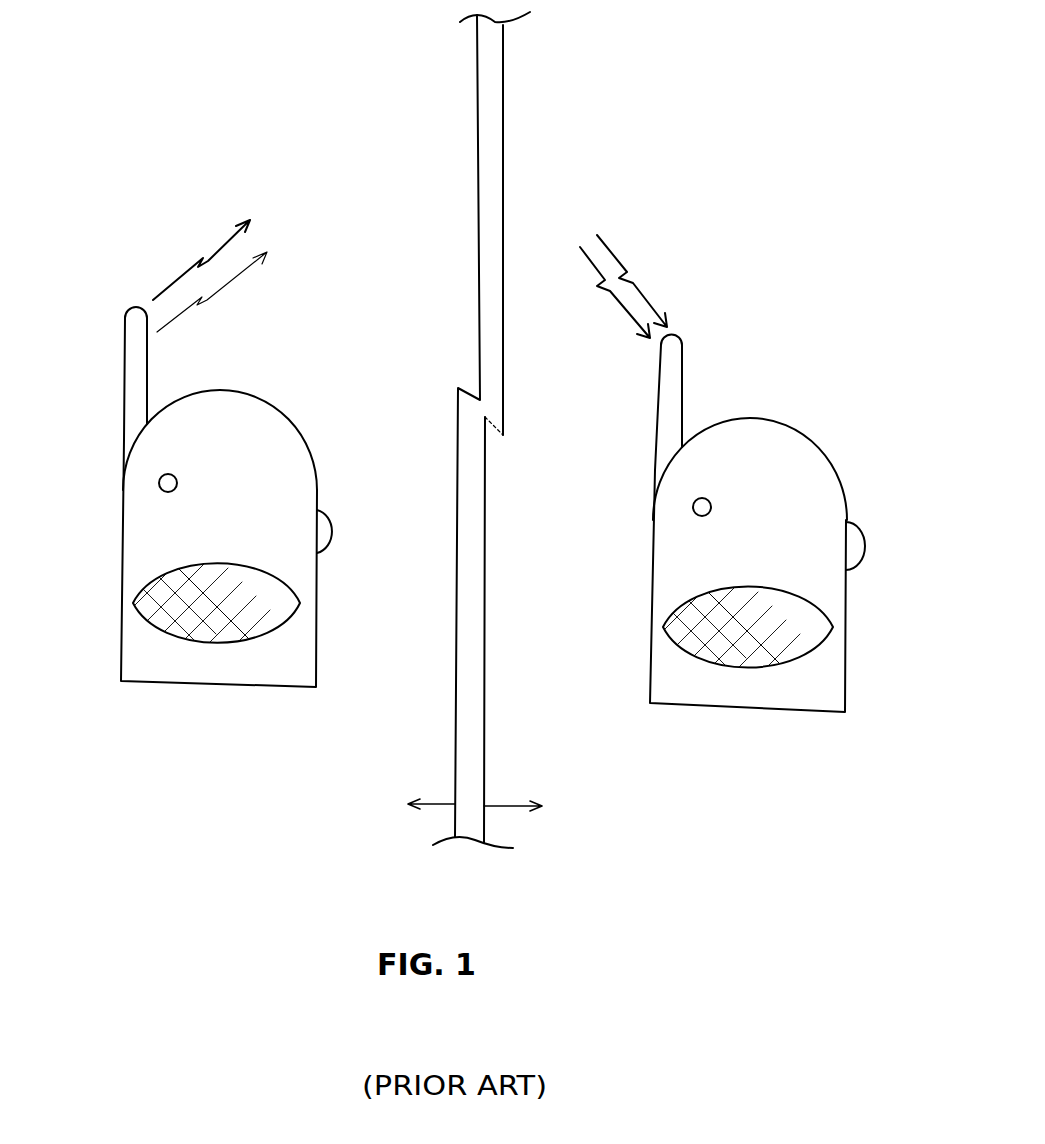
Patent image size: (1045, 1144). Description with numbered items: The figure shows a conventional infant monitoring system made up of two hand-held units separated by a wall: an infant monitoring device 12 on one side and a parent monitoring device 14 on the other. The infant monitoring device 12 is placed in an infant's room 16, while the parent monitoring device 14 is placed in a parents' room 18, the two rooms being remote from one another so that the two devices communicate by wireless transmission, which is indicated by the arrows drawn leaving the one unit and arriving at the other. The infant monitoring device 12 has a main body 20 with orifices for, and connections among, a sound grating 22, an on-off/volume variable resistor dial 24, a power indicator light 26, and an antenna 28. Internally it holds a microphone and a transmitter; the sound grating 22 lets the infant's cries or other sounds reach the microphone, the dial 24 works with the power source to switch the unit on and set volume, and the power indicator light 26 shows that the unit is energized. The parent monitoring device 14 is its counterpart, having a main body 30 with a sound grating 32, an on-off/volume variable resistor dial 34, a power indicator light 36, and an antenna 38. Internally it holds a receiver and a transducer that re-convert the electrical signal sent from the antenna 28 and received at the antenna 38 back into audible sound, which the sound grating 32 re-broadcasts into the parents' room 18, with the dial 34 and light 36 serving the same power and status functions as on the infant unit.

The infant monitoring device 12 is at (215, 495).
The parent monitoring device 14 is at (751, 512).
The infant's room 16 is at (407, 806).
The parents' room 18 is at (528, 806).
The main body 20 is at (115, 621).
The sound grating 22 is at (300, 603).
The on-off/volume variable resistor dial 24 is at (337, 531).
The power indicator light 26 is at (163, 491).
The antenna 28 is at (126, 401).
The main body 30 is at (652, 665).
The sound grating 32 is at (834, 627).
The on-off/volume variable resistor dial 34 is at (866, 545).
The power indicator light 36 is at (700, 516).
The antenna 38 is at (660, 398).